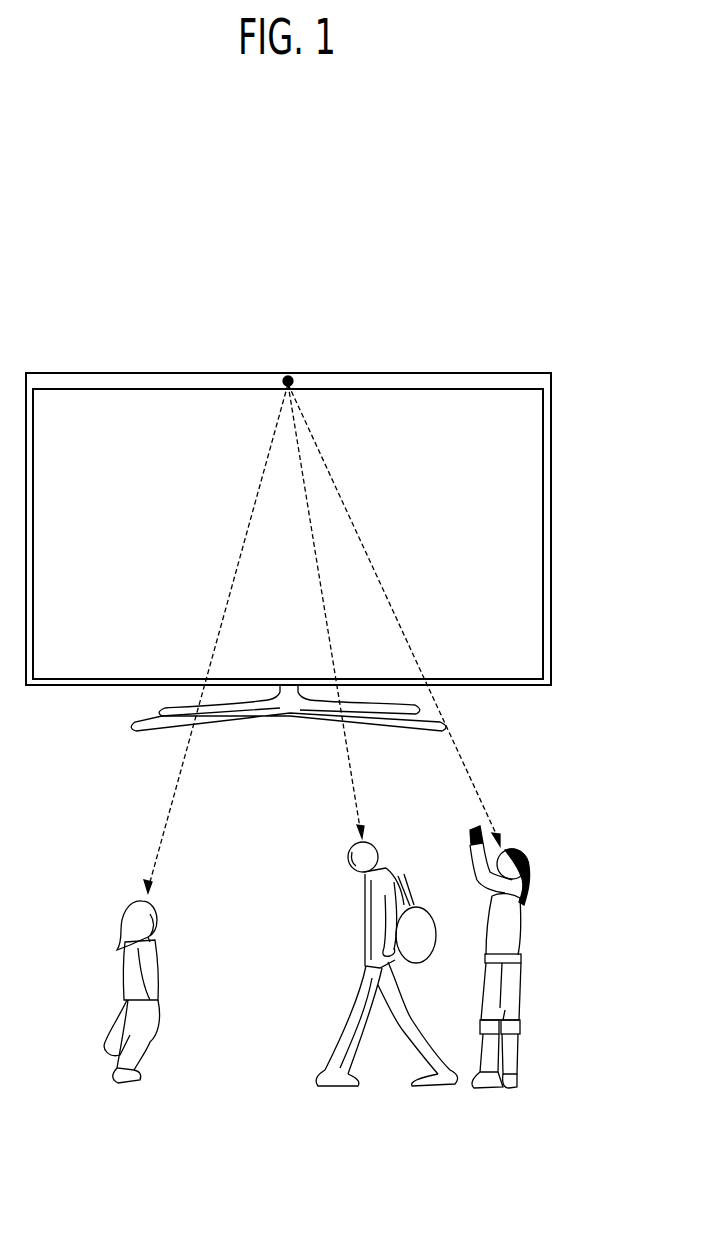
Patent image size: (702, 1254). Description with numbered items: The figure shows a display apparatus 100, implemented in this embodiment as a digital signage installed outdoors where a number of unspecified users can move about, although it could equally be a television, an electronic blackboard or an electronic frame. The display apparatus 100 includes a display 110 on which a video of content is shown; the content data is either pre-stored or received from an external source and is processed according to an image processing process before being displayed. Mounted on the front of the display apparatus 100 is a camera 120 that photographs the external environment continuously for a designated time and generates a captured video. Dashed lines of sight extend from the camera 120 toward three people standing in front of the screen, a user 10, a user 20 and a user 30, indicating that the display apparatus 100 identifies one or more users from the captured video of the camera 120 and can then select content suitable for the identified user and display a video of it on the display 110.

The display apparatus 100 is at (80, 350).
The display 110 is at (424, 405).
The camera 120 is at (286, 374).
The child user 10 is at (118, 964).
The adult user with bag 20 is at (362, 930).
The user raising hand 30 is at (522, 942).